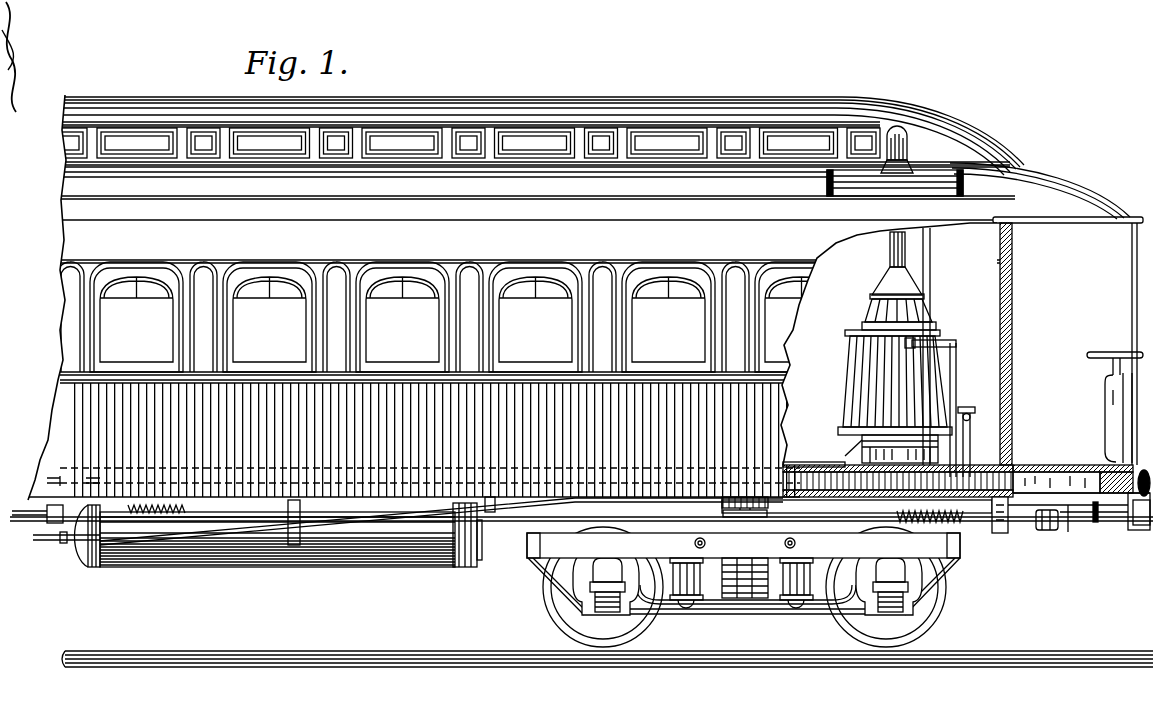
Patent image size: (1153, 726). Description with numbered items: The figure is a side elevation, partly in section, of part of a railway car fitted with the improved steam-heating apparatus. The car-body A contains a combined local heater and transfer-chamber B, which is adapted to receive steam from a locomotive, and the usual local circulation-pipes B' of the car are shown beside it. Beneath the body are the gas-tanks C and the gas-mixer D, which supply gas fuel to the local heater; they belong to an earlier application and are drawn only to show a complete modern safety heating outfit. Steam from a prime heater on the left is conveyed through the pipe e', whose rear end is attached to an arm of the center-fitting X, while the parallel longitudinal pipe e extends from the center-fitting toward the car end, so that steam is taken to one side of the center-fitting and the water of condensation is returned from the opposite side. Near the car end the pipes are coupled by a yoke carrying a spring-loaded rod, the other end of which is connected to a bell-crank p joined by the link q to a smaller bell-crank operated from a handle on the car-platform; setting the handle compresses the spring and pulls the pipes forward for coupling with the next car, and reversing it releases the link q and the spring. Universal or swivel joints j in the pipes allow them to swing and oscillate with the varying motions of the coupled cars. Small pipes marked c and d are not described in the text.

The car-body A is at (28, 431).
The combined local heater and transfer-chamber B is at (895, 333).
The local circulation-pipes B' is at (860, 451).
The gas-tanks C is at (400, 556).
The gas-mixer D is at (491, 510).
The pipe c is at (507, 415).
The pipe with valve d is at (533, 446).
The longitudinal steam pipe e is at (581, 520).
The steam-conveying pipe e' is at (24, 504).
The center-fitting X is at (50, 518).
The bell-crank p is at (1073, 483).
The universal or swivel joint j is at (1046, 530).
The link q is at (1067, 524).